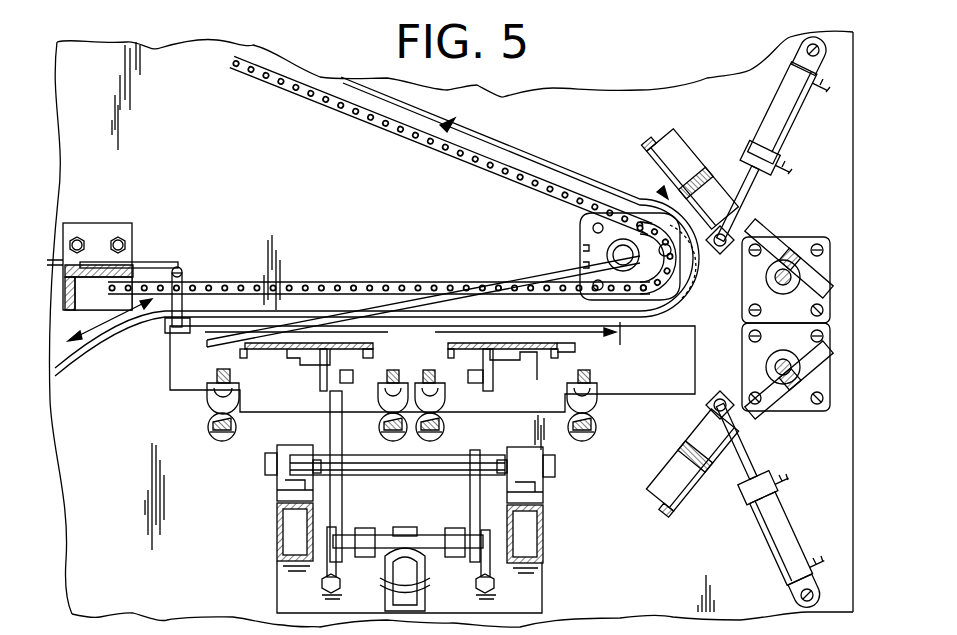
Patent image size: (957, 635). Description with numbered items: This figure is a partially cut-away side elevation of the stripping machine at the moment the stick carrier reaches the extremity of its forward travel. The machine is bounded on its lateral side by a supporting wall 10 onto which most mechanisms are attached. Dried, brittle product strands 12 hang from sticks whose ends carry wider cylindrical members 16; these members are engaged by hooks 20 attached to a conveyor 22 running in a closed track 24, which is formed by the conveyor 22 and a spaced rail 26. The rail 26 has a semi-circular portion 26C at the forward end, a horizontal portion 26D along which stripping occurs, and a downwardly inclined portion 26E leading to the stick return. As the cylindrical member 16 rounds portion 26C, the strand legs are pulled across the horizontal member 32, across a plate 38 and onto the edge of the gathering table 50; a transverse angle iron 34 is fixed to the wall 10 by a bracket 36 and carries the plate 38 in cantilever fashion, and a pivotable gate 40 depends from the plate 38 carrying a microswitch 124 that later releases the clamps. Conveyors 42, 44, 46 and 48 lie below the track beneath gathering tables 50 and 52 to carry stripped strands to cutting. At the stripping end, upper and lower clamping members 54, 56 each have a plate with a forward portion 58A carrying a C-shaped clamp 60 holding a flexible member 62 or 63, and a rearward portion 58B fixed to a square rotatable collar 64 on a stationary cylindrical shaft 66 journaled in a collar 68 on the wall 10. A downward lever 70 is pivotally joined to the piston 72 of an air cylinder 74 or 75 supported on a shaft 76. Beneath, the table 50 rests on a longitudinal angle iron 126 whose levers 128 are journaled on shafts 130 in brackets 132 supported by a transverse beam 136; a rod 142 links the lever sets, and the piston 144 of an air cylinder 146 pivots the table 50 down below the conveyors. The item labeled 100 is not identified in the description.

The supporting wall 10 is at (292, 177).
The alimentary paste product strands 12 is at (500, 276).
The cylindrical member 16 is at (671, 246).
The hooks 20 is at (666, 194).
The conveyor 22 is at (452, 150).
The closed track 24 is at (448, 126).
The rail 26 is at (528, 148).
The semi-circular rail portion 26C is at (695, 262).
The horizontal rail portion 26D is at (412, 333).
The inclined rail portion 26E is at (110, 320).
The horizontal member 32 is at (58, 212).
The angle iron 34 is at (130, 262).
The bracket 36 is at (95, 222).
The plate 38 is at (182, 273).
The gate 40 is at (190, 325).
The conveyor 42 is at (206, 428).
The conveyor 44 is at (396, 380).
The conveyor 46 is at (444, 395).
The conveyor 48 is at (597, 427).
The gathering table 50 is at (382, 391).
The gathering table 52 is at (562, 350).
The upper clamping member 54 is at (698, 135).
The lower clamping member 56 is at (700, 492).
The plate forward portion 58A is at (712, 178).
The plate rearward portion 58B is at (800, 250).
The C-shaped clamp 60 is at (657, 140).
The flexible member 62 is at (642, 158).
The flexible member 63 is at (656, 500).
The collar 64 is at (778, 282).
The cylindrical shaft 66 is at (768, 290).
The collar 68 is at (744, 305).
The lever 70 is at (752, 226).
The piston 72 is at (748, 192).
The air cylinder 74 is at (797, 122).
The air cylinder 75 is at (786, 556).
The shaft 76 is at (800, 48).
The hub plate 100 is at (583, 246).
The microswitch 124 is at (190, 290).
The angle iron 126 is at (305, 358).
The lever 128 is at (330, 428).
The shaft 130 is at (362, 455).
The bracket 132 is at (280, 478).
The beam 136 is at (277, 545).
The rod 142 is at (448, 532).
The piston 144 is at (395, 556).
The air cylinder 146 is at (428, 584).